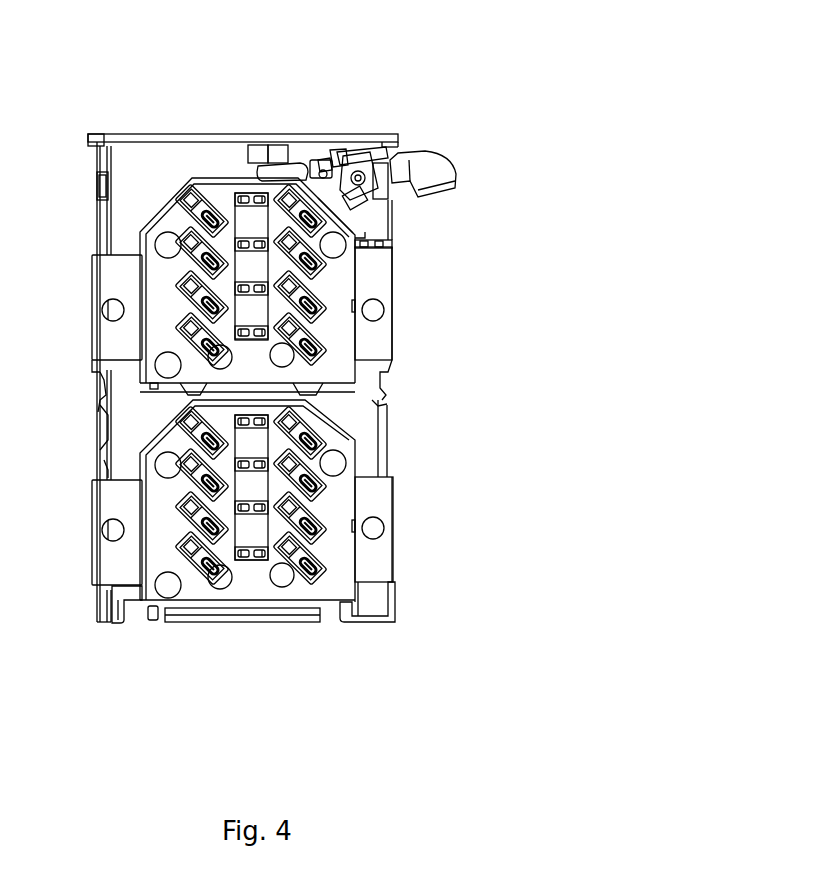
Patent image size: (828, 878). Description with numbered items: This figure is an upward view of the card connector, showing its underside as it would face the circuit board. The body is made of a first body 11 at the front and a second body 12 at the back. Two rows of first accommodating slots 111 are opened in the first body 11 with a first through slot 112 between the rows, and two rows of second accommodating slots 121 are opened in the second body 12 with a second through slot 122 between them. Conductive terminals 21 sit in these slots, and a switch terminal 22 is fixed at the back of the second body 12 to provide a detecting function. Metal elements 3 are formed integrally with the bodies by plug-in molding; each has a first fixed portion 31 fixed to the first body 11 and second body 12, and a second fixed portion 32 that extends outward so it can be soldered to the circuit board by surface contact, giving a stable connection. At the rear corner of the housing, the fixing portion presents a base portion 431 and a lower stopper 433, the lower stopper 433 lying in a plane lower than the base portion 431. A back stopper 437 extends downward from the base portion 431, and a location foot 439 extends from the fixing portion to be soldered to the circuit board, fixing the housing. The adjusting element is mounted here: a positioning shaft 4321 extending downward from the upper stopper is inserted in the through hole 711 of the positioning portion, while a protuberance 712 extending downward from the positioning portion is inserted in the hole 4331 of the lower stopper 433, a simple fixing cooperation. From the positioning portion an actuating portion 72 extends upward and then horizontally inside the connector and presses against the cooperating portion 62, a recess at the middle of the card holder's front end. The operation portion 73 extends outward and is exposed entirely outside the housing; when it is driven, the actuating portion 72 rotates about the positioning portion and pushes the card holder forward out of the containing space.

The metal element 3 is at (393, 549).
The first body 11 is at (298, 501).
The second body 12 is at (298, 307).
The conductive terminal 21 is at (365, 316).
The switch terminal 22 is at (120, 594).
The first fixed portion 31 is at (91, 532).
The second fixed portion 32 is at (91, 313).
The cooperating portion 62 is at (243, 108).
The actuating portion 72 is at (235, 118).
The operation portion 73 is at (448, 139).
The first accommodating slot 111 is at (134, 491).
The first through slot 112 is at (154, 478).
The second accommodating slot 121 is at (129, 237).
The second through slot 122 is at (149, 245).
The base portion 431 is at (406, 231).
The lower stopper 433 is at (357, 127).
The back stopper 437 is at (400, 207).
The location foot 439 is at (387, 255).
The through hole 711 is at (367, 111).
The protuberance 712 is at (261, 116).
The positioning shaft 4321 is at (323, 108).
The hole 4331 is at (280, 93).